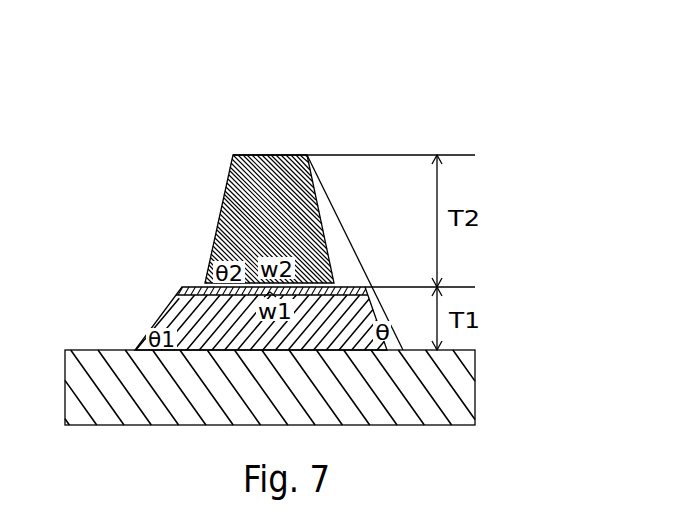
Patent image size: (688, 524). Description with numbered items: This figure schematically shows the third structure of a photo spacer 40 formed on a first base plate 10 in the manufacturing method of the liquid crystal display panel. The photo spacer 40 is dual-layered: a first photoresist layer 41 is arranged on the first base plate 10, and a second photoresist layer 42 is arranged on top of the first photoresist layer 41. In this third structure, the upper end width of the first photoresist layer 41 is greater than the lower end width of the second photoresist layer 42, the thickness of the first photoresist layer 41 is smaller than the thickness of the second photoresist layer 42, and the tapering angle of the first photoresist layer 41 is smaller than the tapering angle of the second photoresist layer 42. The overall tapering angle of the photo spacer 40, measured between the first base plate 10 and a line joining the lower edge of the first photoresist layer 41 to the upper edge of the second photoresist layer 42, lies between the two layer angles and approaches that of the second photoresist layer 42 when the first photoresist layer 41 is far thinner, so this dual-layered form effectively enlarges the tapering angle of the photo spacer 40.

The first base plate 10 is at (475, 388).
The photo spacer 40 is at (241, 175).
The first photoresist layer 41 is at (156, 322).
The second photoresist layer 42 is at (217, 221).